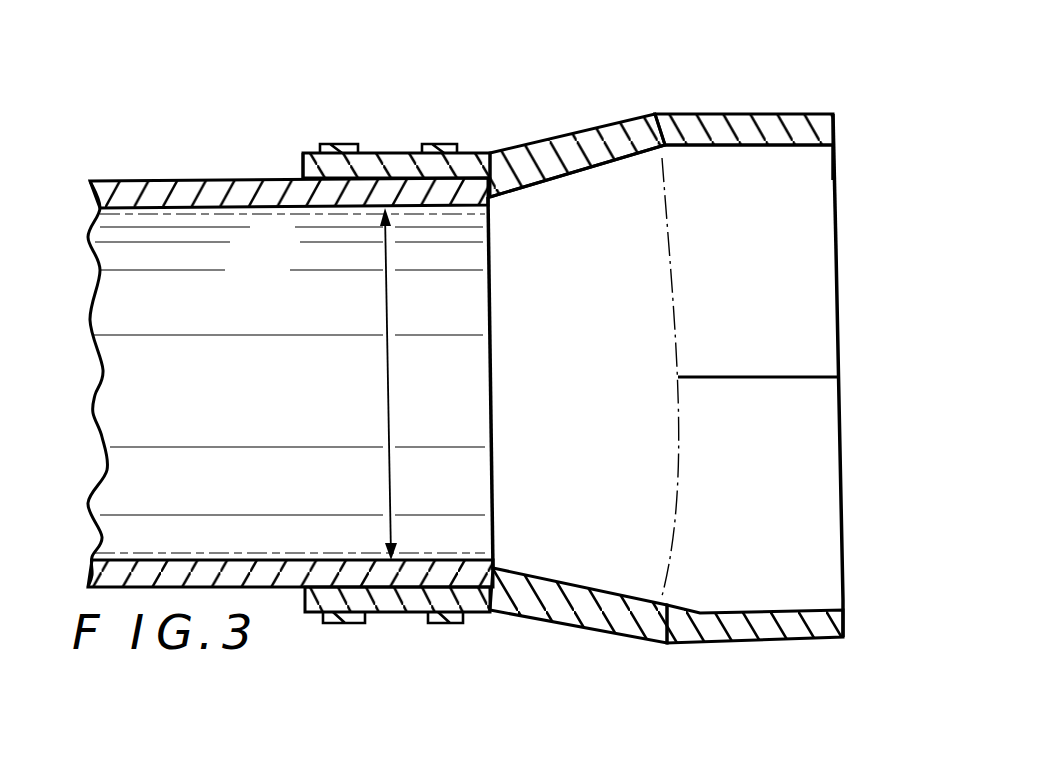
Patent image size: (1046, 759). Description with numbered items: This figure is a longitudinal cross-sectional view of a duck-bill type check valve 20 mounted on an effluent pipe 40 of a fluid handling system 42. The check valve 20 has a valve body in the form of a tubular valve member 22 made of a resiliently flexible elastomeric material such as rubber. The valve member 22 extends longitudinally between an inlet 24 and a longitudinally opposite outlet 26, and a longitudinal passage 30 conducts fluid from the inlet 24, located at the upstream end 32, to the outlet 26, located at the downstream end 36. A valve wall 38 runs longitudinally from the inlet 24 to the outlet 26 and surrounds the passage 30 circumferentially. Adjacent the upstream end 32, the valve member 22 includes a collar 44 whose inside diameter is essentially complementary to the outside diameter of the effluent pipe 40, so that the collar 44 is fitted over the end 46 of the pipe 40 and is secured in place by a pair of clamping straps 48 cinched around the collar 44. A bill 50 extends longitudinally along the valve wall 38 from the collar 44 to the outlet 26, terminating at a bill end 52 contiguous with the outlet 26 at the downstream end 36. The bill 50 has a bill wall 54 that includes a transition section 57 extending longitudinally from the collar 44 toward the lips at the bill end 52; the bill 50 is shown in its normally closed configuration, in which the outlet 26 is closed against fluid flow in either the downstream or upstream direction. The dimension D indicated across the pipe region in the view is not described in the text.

The check valve 20 is at (715, 66).
The tubular valve member 22 is at (655, 114).
The inlet 24 is at (290, 205).
The outlet 26 is at (833, 148).
The longitudinal passage 30 is at (580, 176).
The upstream end 32 is at (302, 165).
The downstream end 36 is at (835, 122).
The valve wall 38 is at (717, 127).
The effluent pipe 40 is at (183, 179).
The fluid handling system 42 is at (118, 158).
The collar 44 is at (395, 152).
The end of pipe 46 is at (500, 175).
The clamping straps 48 is at (340, 143).
The bill 50 is at (755, 110).
The bill end 52 is at (838, 268).
The bill wall 54 is at (740, 617).
The transition section 57 is at (552, 586).
The pipe inner diameter D is at (390, 398).